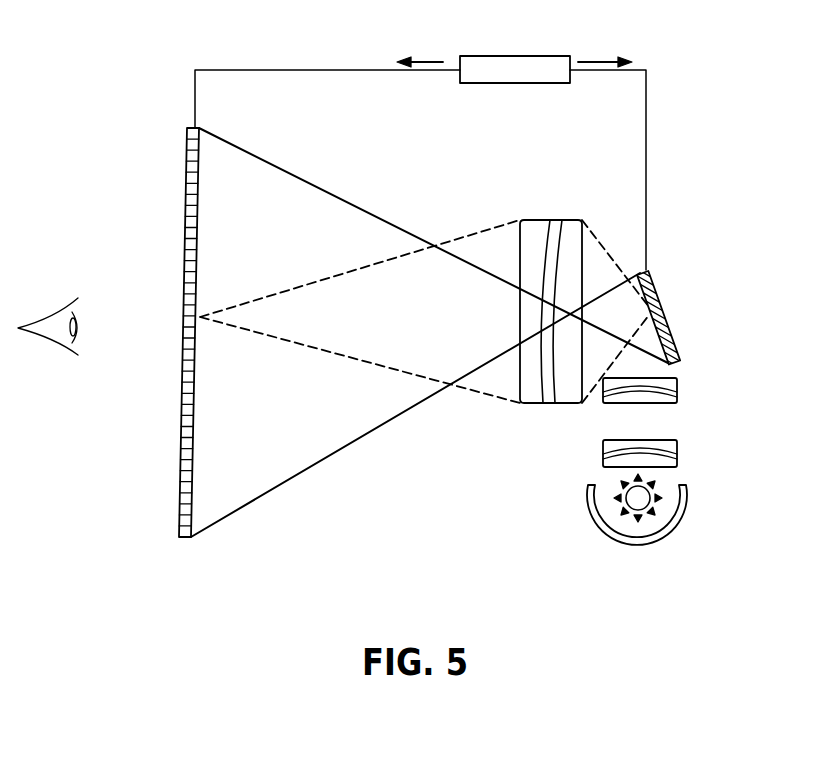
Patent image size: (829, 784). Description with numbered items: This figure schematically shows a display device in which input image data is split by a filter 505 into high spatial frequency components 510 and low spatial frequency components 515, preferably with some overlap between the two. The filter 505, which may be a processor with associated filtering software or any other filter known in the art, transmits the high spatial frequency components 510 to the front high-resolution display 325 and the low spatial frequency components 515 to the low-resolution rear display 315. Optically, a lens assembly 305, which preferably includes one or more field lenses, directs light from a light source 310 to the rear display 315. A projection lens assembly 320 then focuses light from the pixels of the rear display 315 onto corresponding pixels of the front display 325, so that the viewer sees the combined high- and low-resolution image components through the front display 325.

The lens assembly 305 is at (685, 380).
The light source 310 is at (582, 538).
The rear display 315 is at (652, 275).
The projection lens assembly 320 is at (580, 212).
The front display 325 is at (190, 127).
The filter 505 is at (516, 56).
The high spatial frequency components 510 is at (422, 50).
The low spatial frequency components 515 is at (605, 50).